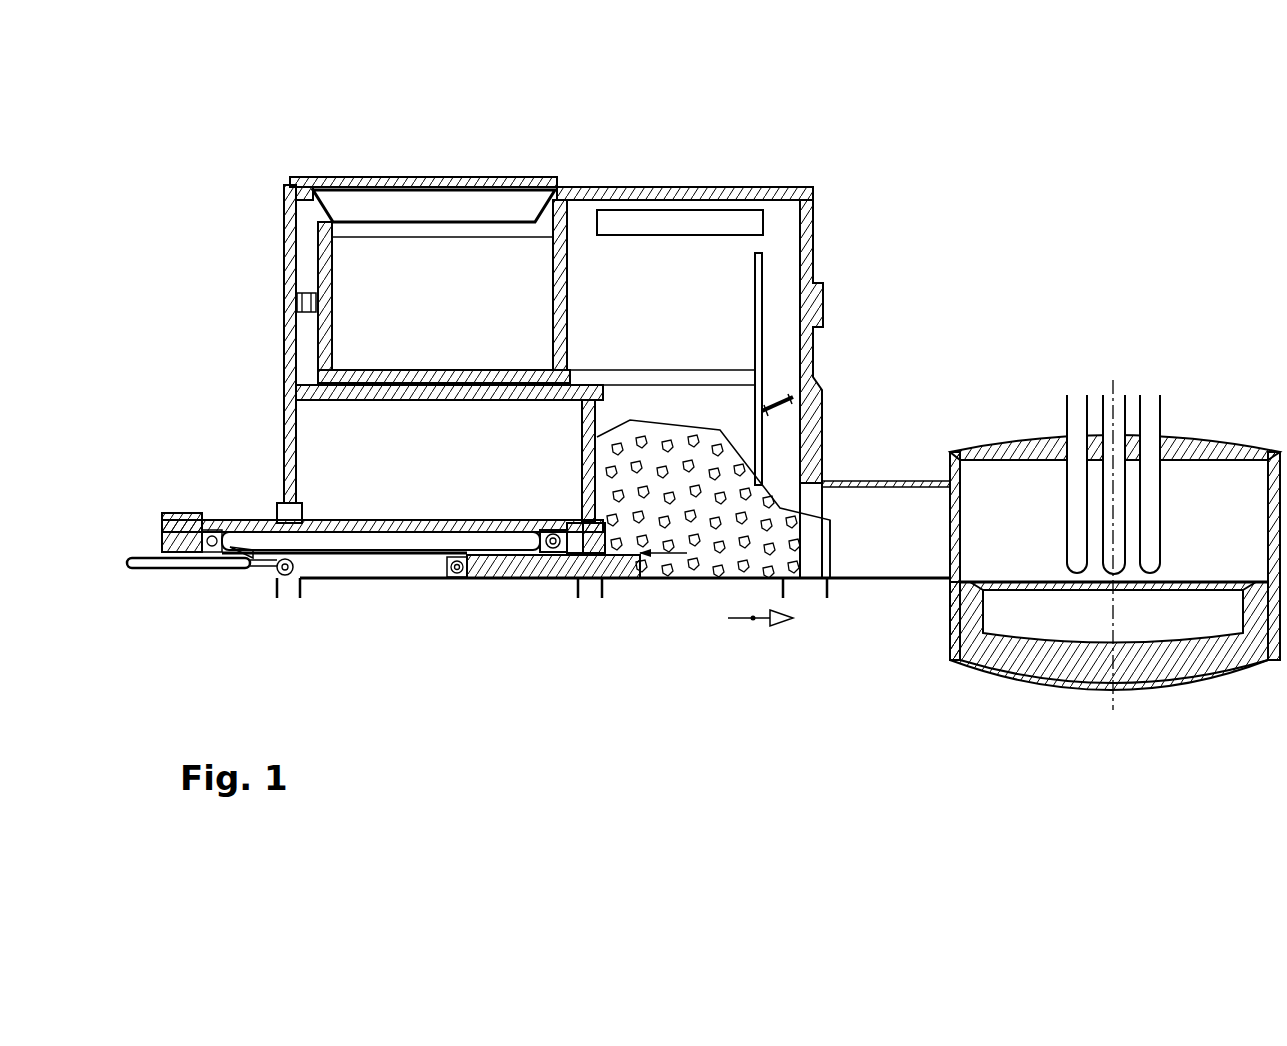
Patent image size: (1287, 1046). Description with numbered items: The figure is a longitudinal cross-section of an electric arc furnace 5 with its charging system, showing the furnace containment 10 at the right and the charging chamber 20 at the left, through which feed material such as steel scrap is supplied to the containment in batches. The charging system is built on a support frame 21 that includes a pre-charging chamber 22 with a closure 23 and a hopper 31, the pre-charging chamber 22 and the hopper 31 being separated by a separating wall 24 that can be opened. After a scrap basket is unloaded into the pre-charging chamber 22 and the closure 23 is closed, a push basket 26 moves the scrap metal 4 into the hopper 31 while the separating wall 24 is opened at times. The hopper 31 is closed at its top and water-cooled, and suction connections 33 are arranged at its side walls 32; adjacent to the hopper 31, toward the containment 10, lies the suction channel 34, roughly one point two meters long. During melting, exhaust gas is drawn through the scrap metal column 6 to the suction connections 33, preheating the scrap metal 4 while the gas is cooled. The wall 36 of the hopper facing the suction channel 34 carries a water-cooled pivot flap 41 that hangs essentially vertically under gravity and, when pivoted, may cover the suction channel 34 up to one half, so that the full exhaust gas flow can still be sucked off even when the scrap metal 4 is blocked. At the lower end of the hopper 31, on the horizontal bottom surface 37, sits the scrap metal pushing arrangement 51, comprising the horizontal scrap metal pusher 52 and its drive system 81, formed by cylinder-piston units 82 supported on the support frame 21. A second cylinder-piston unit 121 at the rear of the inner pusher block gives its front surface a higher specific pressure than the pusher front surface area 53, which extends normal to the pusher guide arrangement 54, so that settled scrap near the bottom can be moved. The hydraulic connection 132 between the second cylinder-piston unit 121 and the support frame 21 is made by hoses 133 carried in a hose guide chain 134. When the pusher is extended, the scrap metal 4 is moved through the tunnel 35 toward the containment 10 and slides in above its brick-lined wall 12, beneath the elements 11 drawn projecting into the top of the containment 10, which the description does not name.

The charging chamber 20 is at (672, 180).
The support frame 21 is at (289, 235).
The pre-charging chamber 22 is at (380, 313).
The closure 23 is at (390, 183).
The separating wall 24 is at (558, 258).
The push basket 26 is at (462, 375).
The suction connection 33 is at (613, 220).
The side wall 32 is at (660, 268).
The hopper 31 is at (680, 290).
The scrap metal column 6 is at (688, 450).
The suction channel 34 is at (780, 268).
The scrap metal 4 is at (714, 455).
The electric arc furnace 5 is at (835, 373).
The wall 36 is at (762, 438).
The tunnel 35 is at (863, 482).
The electrodes 11 is at (1152, 425).
The furnace containment 10 is at (1069, 537).
The brick-lined wall 12 is at (972, 600).
The pivot flap 41 is at (830, 580).
The pusher guide arrangement 54 is at (754, 620).
The bottom surface 37 is at (705, 580).
The pusher front surface area 53 is at (687, 553).
The scrap metal pusher 52 is at (578, 583).
The scrap metal pushing arrangement 51 is at (522, 586).
The cylinder-piston unit 82 is at (483, 545).
The drive system 81 is at (400, 550).
The second cylinder-piston unit 121 is at (340, 562).
The hydraulic connection 132 is at (229, 577).
The hoses 133 is at (132, 563).
The hose guide chain 134 is at (192, 566).